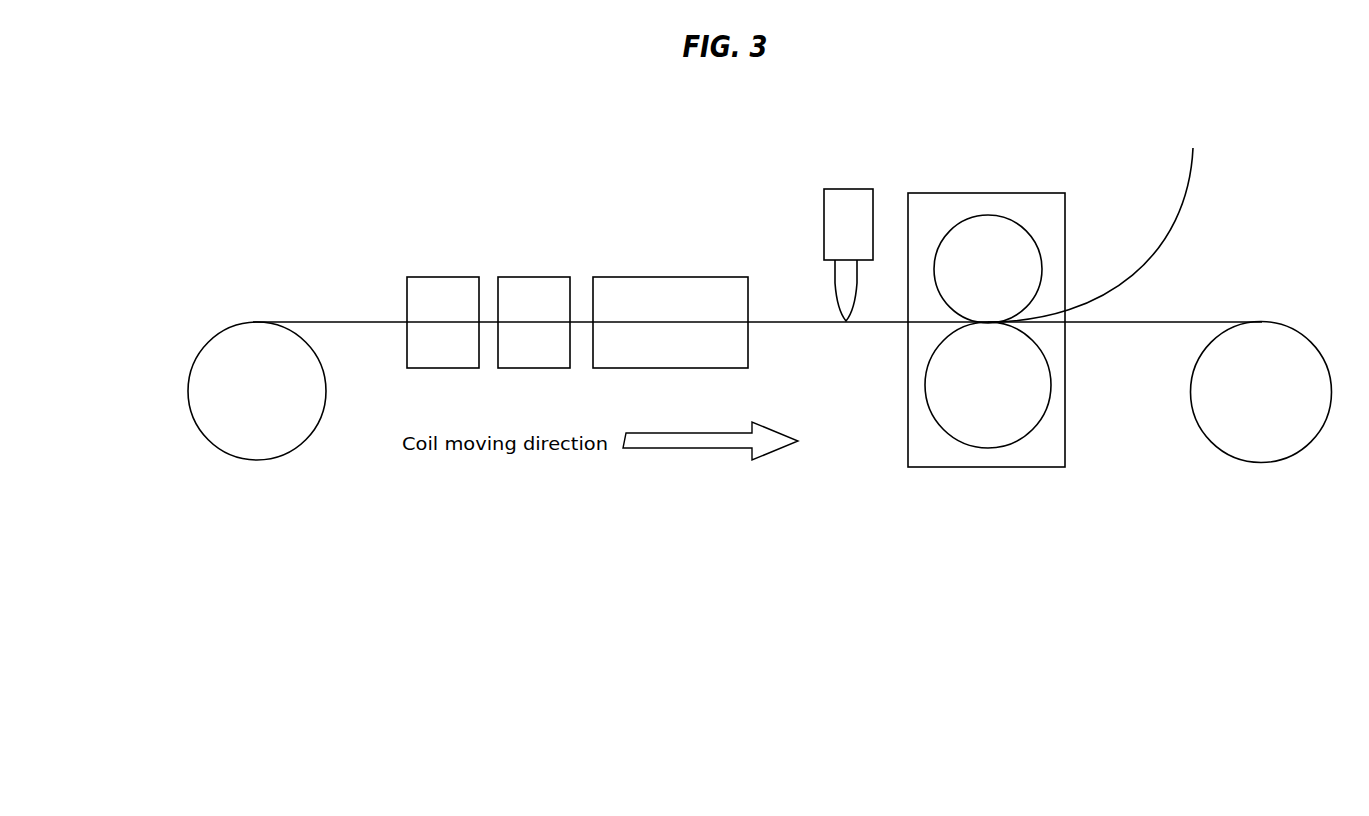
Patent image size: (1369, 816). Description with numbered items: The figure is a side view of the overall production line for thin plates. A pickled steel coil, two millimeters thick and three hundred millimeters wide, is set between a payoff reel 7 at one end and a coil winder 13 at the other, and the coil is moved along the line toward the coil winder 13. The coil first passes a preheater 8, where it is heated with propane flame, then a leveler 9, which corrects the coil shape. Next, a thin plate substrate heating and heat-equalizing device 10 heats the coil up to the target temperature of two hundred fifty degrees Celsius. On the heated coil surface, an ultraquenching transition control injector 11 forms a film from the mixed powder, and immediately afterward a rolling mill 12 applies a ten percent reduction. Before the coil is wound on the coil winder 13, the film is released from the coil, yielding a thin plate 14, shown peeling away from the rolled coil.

The payoff reel 7 is at (254, 388).
The preheater 8 is at (443, 307).
The leveler 9 is at (534, 307).
The thin plate substrate heating and heat-equalizing device 10 is at (670, 307).
The ultraquenching transition control injector 11 is at (848, 240).
The rolling mill 12 is at (986, 316).
The coil winder 13 is at (1261, 388).
The thin plate 14 is at (1103, 235).